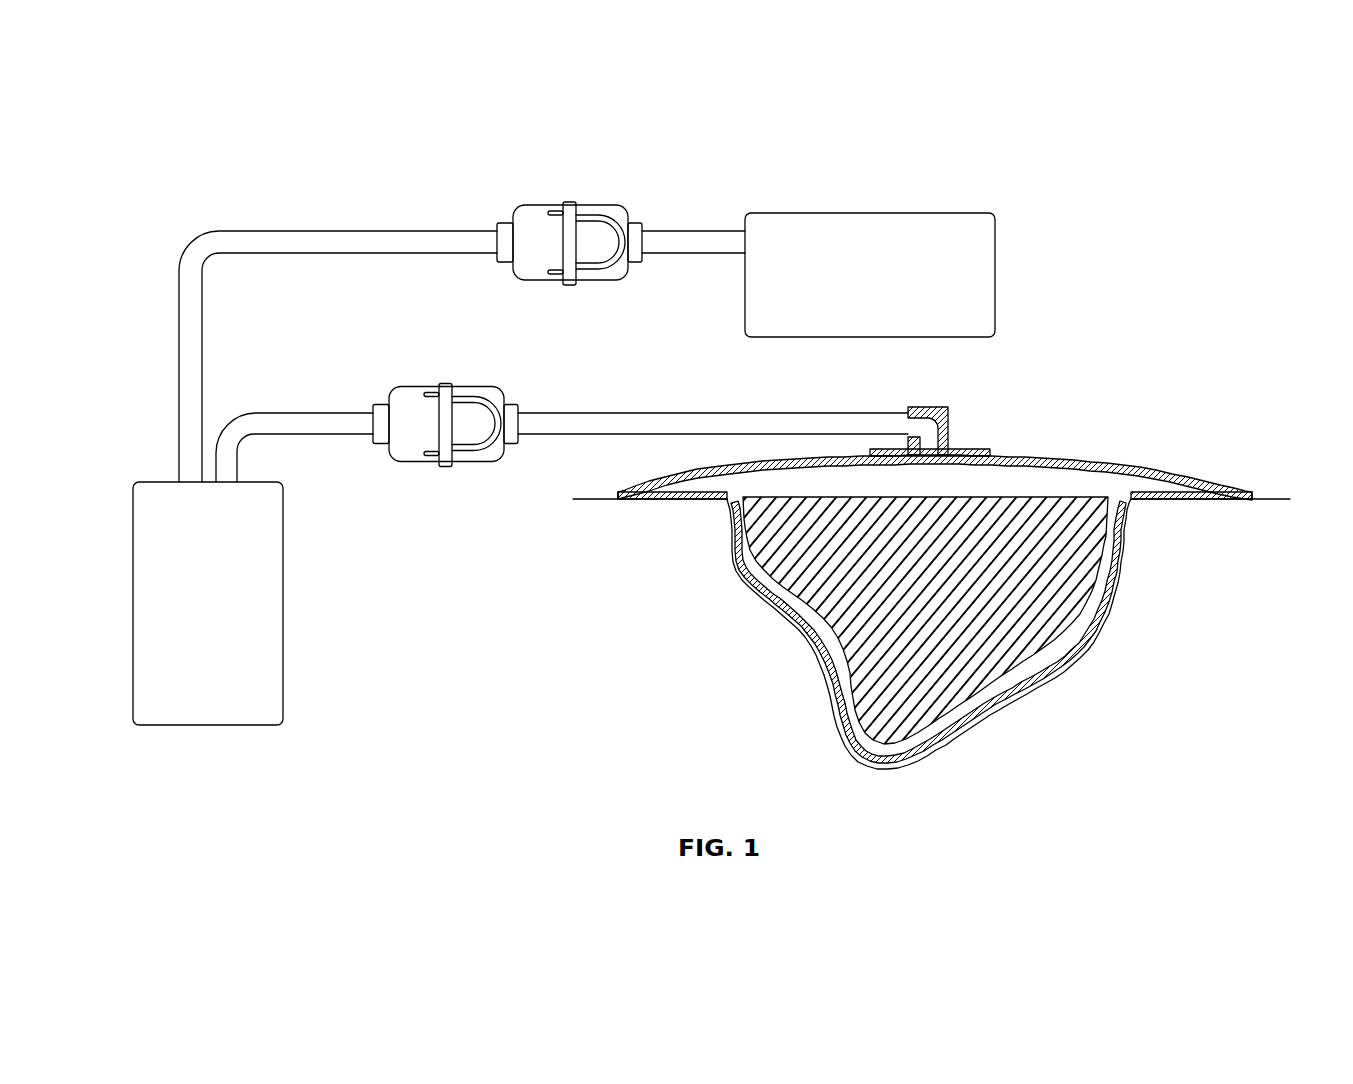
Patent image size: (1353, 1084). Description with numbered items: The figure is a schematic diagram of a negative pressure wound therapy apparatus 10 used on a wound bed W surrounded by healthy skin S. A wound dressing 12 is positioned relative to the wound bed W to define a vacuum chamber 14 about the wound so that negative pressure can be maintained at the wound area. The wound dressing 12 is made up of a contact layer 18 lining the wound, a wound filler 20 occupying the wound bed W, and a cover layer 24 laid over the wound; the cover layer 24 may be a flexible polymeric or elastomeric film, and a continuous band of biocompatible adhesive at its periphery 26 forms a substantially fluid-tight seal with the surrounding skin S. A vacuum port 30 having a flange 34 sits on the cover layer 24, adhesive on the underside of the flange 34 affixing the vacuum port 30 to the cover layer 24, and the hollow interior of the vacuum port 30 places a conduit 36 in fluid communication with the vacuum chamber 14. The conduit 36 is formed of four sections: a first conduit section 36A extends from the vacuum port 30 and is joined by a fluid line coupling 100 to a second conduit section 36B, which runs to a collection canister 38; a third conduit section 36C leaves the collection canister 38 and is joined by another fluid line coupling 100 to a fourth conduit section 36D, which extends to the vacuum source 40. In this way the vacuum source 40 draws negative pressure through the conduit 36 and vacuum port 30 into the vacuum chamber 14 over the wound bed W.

The negative pressure wound therapy apparatus 10 is at (1148, 205).
The wound dressing 12 is at (913, 570).
The vacuum chamber 14 is at (1102, 463).
The contact layer 18 is at (1113, 570).
The wound filler 20 is at (985, 635).
The cover layer 24 is at (1082, 468).
The periphery of the cover layer 26 is at (625, 486).
The vacuum port 30 is at (935, 407).
The flange 34 is at (962, 449).
The conduit 36 is at (543, 341).
The first conduit section 36A is at (664, 413).
The second conduit section 36B is at (263, 413).
The third conduit section 36C is at (348, 231).
The fourth conduit section 36D is at (678, 231).
The collection canister 38 is at (283, 563).
The vacuum source 40 is at (995, 275).
The fluid line coupling 100 is at (533, 205).
The skin S is at (650, 500).
The wound bed W is at (800, 630).